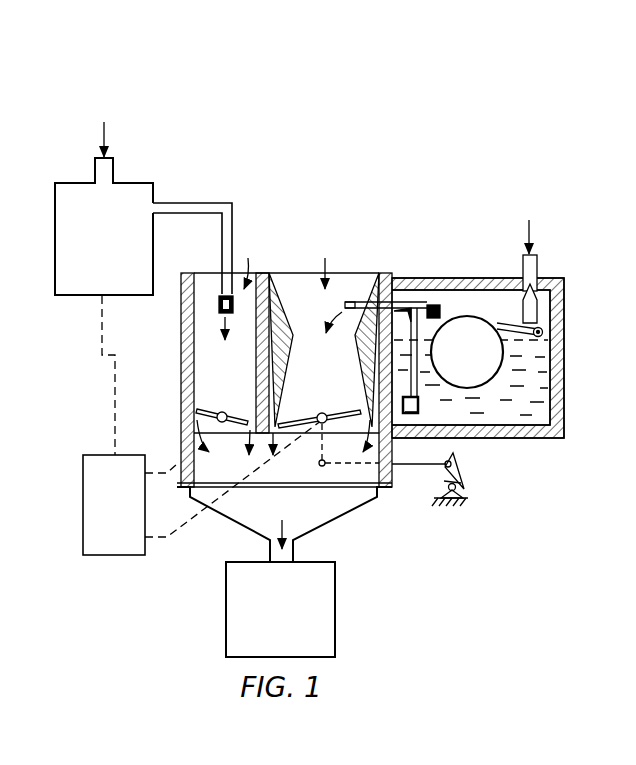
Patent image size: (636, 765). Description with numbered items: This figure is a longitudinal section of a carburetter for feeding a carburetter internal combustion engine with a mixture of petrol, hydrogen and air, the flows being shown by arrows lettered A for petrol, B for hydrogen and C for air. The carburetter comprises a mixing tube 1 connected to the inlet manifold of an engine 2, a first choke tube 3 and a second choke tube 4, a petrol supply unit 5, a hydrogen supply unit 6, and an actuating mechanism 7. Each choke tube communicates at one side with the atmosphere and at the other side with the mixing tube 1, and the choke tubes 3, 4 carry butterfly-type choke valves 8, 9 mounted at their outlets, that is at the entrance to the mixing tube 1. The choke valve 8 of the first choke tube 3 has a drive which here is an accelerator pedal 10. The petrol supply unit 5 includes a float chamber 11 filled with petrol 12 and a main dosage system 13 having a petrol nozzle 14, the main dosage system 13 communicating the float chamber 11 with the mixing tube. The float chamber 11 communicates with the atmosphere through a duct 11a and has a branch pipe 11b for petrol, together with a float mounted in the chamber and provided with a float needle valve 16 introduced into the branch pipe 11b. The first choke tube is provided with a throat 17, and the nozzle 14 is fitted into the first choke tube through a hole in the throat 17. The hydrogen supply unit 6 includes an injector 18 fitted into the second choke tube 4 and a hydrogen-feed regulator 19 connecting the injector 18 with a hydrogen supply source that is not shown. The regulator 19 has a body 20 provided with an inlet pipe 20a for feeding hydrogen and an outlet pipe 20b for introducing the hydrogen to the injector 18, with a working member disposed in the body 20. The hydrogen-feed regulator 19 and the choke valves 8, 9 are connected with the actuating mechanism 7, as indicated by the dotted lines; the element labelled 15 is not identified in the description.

The mixing tube 1 is at (391, 480).
The engine 2 is at (280, 609).
The first choke tube 3 is at (367, 270).
The second choke tube 4 is at (263, 263).
The petrol supply unit 5 is at (479, 357).
The hydrogen supply unit 6 is at (180, 206).
The actuating mechanism 7 is at (202, 425).
The choke valve 8 is at (313, 418).
The choke valve 9 is at (216, 410).
The accelerator pedal 10 is at (463, 484).
The float chamber 11 is at (541, 438).
The duct 11a is at (432, 278).
The branch pipe 11b is at (538, 268).
The petrol 12 is at (493, 438).
The main dosage system 13 is at (420, 343).
The petrol nozzle 14 is at (354, 302).
The valve 15 is at (474, 321).
The float needle valve 16 is at (534, 307).
The throat 17 is at (366, 374).
The injector 18 is at (222, 313).
The hydrogen-feed regulator 19 is at (104, 226).
The body 20 is at (129, 299).
The inlet pipe 20a is at (100, 180).
The conduit section 20b is at (172, 214).